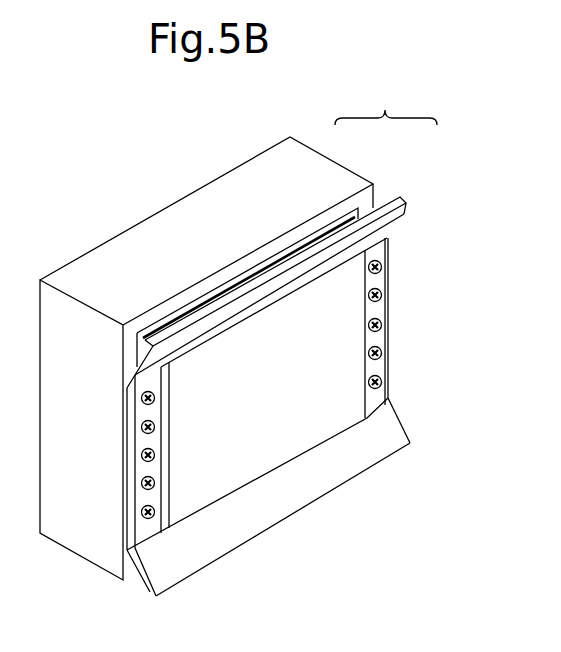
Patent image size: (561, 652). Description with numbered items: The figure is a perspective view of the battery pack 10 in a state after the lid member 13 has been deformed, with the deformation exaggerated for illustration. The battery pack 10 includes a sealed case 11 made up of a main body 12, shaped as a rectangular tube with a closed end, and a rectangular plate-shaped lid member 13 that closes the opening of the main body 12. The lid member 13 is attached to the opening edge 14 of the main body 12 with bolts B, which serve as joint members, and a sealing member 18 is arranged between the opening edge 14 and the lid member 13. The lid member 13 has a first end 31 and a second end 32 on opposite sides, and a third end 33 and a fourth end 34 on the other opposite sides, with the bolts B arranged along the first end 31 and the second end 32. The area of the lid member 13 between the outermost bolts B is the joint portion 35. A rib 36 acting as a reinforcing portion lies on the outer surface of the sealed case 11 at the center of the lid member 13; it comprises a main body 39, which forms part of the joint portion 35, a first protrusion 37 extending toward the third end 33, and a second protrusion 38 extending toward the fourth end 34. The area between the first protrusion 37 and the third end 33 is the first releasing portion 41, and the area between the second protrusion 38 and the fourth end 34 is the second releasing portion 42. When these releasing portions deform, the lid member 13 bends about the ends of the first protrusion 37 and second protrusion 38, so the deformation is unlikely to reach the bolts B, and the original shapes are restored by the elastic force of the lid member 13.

The battery pack 10 is at (70, 175).
The sealed case 11 is at (386, 105).
The main body 12 is at (357, 146).
The lid member 13 is at (407, 201).
The opening edge 14 is at (130, 345).
The sealing member 18 is at (307, 243).
The first end 31 is at (130, 472).
The second end 32 is at (390, 334).
The third end 33 is at (277, 277).
The fourth end 34 is at (337, 488).
The joint portion 35 is at (140, 448).
The rib 36 is at (277, 472).
The first protrusion 37 is at (213, 367).
The second protrusion 38 is at (307, 430).
The main body 39 is at (343, 367).
The first releasing portion 41 is at (232, 313).
The second releasing portion 42 is at (213, 537).
The bolts B is at (157, 427).